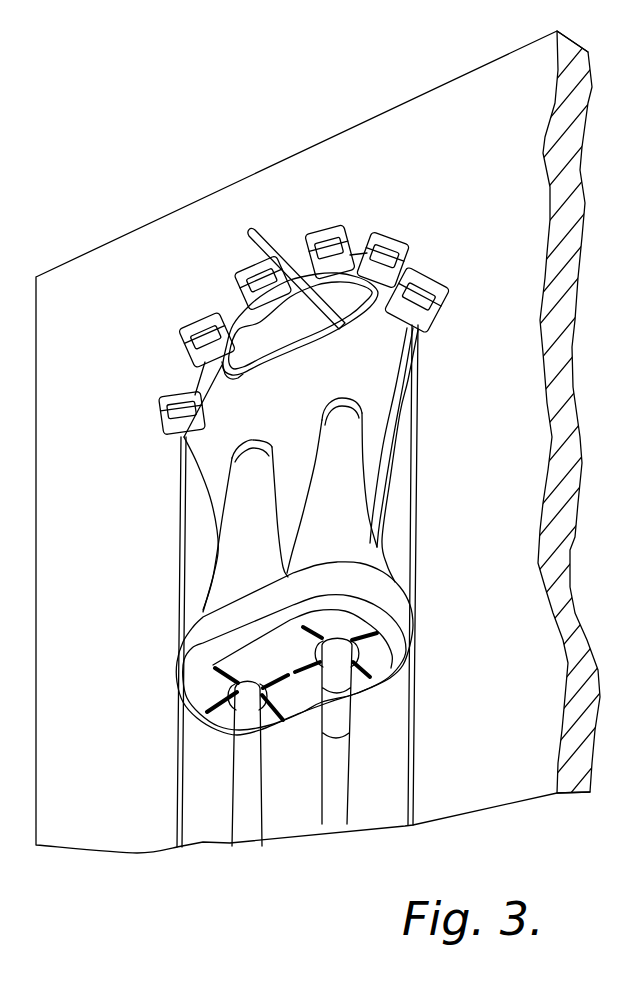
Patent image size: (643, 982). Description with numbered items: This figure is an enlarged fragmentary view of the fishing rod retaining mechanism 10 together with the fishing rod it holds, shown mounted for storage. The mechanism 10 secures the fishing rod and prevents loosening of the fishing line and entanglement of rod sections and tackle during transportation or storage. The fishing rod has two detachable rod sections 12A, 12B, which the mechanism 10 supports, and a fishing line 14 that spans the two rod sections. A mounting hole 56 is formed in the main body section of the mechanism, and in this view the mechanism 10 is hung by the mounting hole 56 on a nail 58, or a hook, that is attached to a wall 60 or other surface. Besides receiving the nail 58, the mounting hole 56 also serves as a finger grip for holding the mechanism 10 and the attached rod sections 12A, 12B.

The fishing rod retaining mechanism 10 is at (205, 468).
The rod section 12A is at (335, 768).
The rod section 12B is at (247, 785).
The fishing line 14 is at (420, 440).
The mounting hole 56 is at (346, 300).
The nail 58 is at (264, 240).
The wall 60 is at (149, 316).